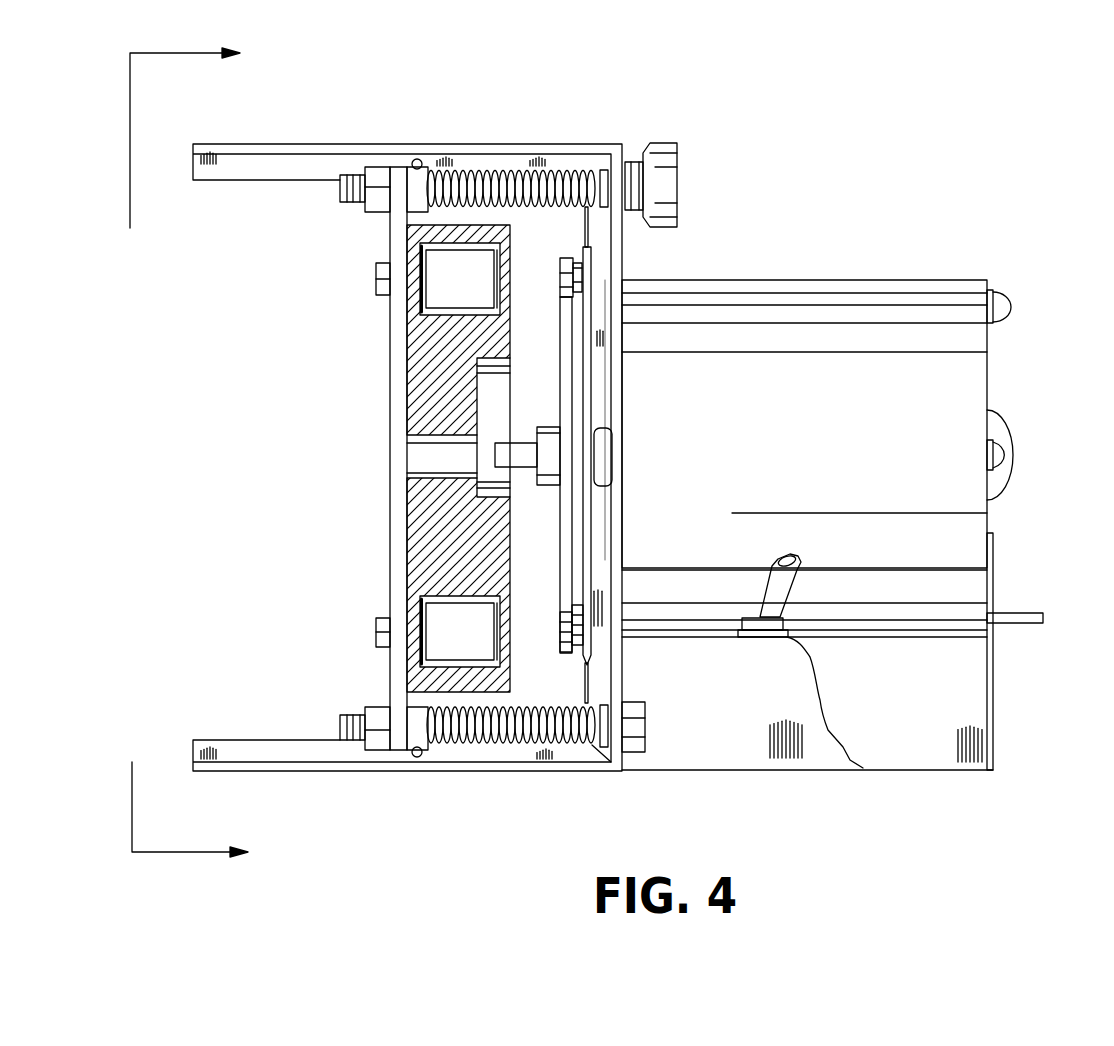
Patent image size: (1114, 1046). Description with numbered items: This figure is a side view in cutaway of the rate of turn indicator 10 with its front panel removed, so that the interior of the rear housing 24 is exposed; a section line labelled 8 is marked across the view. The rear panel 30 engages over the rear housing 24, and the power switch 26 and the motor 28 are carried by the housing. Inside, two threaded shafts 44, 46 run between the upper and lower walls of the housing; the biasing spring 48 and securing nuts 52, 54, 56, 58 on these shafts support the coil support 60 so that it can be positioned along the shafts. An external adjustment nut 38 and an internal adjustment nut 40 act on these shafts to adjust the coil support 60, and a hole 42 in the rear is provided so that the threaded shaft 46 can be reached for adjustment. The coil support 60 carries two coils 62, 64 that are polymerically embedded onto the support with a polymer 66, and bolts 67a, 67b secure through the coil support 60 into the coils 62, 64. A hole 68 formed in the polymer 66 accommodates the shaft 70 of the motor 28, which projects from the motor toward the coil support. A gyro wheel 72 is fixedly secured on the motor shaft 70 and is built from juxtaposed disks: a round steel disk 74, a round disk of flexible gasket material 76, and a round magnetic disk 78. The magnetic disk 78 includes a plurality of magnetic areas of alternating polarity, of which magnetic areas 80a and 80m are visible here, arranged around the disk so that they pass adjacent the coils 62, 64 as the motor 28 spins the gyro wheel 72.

The section line 8- 8 is at (205, 457).
The rate of turn indicator 10 is at (928, 153).
The rear housing 24 is at (951, 704).
The power switch 26 is at (875, 611).
The motor 28 is at (816, 464).
The rear panel 30 is at (1025, 651).
The external adjustment nut 38 is at (686, 185).
The internal adjustment nut 40 is at (660, 719).
The hole 42 is at (1003, 738).
The threaded shaft 44 is at (320, 204).
The threaded shaft 46 is at (436, 421).
The biasing spring 48 is at (517, 760).
The securing nut 52 is at (347, 157).
The securing nut 54 is at (445, 157).
The securing nut 56 is at (351, 761).
The securing nut 58 is at (445, 761).
The coil support 60 is at (356, 458).
The coil 62 is at (473, 296).
The coil 64 is at (473, 647).
The polymer 66 is at (414, 458).
The bolt 67a is at (344, 276).
The bolt 67b is at (344, 629).
The hole 68 is at (515, 427).
The motor shaft 70 is at (527, 473).
The gyro wheel 72 is at (592, 264).
The round steel disk 74 is at (645, 407).
The round disk of flexible gasket material 76 is at (548, 257).
The round magnetic disk 78 is at (551, 273).
The magnetic area 80m is at (544, 475).
The magnetic area 80a is at (550, 607).